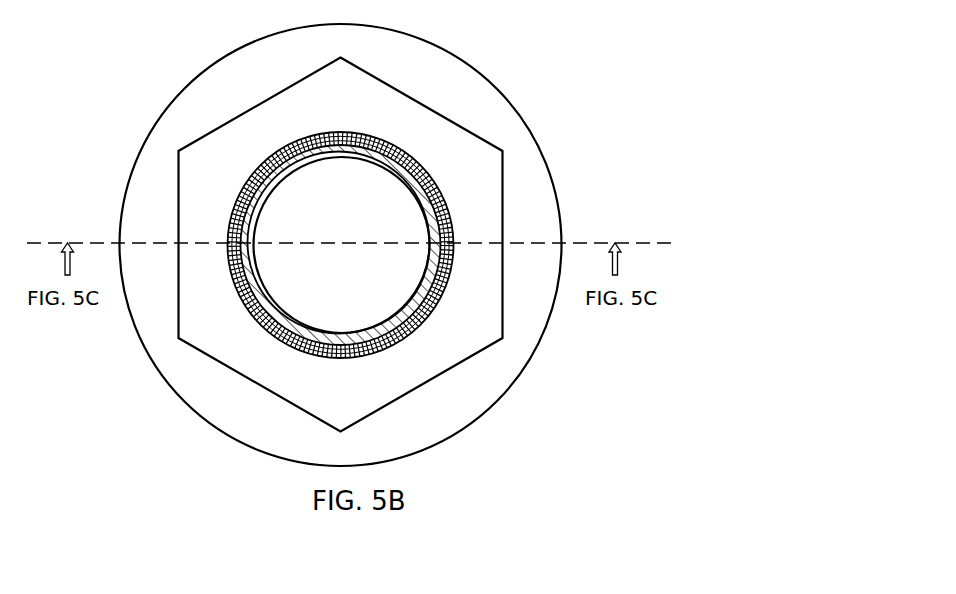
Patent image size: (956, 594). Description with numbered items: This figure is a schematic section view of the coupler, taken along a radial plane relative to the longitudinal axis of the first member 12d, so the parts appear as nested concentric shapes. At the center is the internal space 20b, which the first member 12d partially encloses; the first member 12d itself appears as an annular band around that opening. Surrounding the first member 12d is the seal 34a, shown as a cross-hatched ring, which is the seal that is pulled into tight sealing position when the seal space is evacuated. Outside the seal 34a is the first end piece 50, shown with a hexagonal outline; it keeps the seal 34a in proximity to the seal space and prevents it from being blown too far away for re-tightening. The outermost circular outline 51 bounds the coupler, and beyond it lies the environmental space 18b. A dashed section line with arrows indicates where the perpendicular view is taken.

The environmental space 18b is at (145, 80).
The internal space 20b is at (372, 292).
The first member 12d is at (382, 163).
The seal 34a is at (445, 198).
The first end piece 50 is at (418, 102).
The circular flange 51 is at (513, 105).